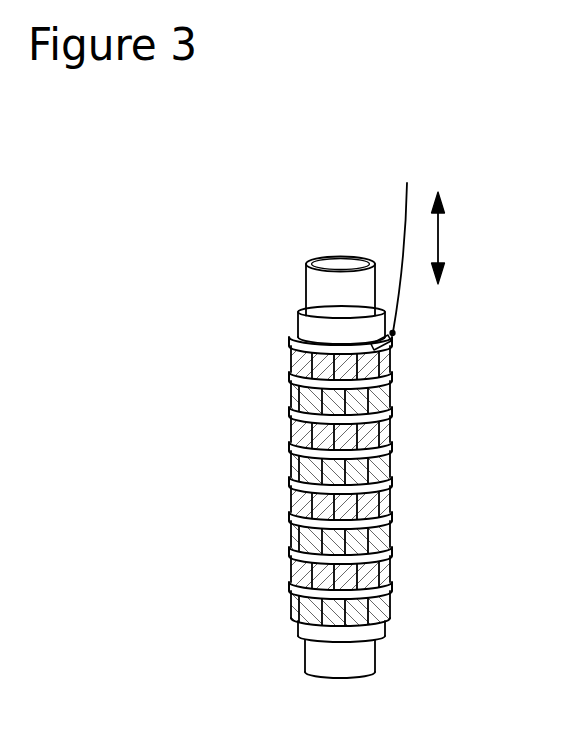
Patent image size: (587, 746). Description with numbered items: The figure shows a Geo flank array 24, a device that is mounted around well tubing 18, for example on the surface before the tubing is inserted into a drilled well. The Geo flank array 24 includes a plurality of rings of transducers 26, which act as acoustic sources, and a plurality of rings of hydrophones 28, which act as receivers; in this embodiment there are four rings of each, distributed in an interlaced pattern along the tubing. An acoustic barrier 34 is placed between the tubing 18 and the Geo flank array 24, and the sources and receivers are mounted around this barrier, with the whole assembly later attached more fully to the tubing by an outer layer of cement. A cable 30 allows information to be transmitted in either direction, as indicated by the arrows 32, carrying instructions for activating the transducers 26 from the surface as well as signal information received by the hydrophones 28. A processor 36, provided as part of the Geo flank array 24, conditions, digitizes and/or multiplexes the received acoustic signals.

The tubing 18 is at (313, 284).
The Geo flank array 24 is at (269, 170).
The rings of transducers 26 is at (292, 418).
The rings of hydrophones 28 is at (384, 395).
The cable 30 is at (408, 196).
The arrows 32 is at (438, 226).
The acoustic barrier 34 is at (300, 630).
The processor 36 is at (389, 340).